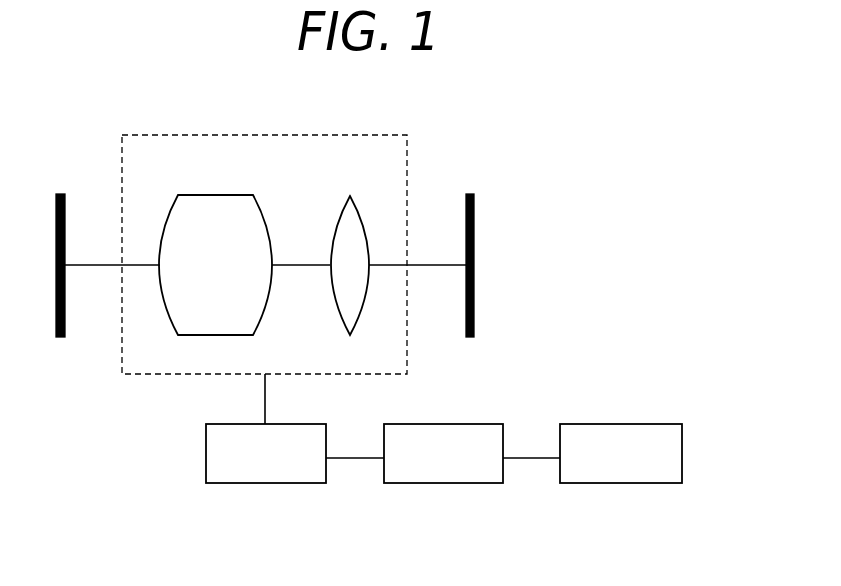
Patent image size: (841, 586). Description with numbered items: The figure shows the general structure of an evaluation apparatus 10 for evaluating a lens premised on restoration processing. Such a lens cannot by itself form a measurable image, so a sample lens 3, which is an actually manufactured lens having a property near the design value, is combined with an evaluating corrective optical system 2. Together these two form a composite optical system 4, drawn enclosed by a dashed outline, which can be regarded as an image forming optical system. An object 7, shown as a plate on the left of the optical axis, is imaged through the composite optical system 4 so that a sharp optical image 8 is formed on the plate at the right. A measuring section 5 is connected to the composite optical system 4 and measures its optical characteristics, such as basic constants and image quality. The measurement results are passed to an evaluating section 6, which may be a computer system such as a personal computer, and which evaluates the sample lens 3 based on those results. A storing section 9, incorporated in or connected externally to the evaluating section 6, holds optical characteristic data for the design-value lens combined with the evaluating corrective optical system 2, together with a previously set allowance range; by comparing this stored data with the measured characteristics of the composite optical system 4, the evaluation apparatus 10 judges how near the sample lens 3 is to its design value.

The evaluating corrective optical system 2 is at (232, 195).
The sample lens 3 is at (351, 196).
The composite optical system 4 is at (388, 135).
The measuring section 5 is at (300, 483).
The evaluating section 6 is at (483, 483).
The object 7 is at (61, 193).
The optical image 8 is at (470, 193).
The storing section 9 is at (660, 483).
The evaluation apparatus 10 is at (524, 83).